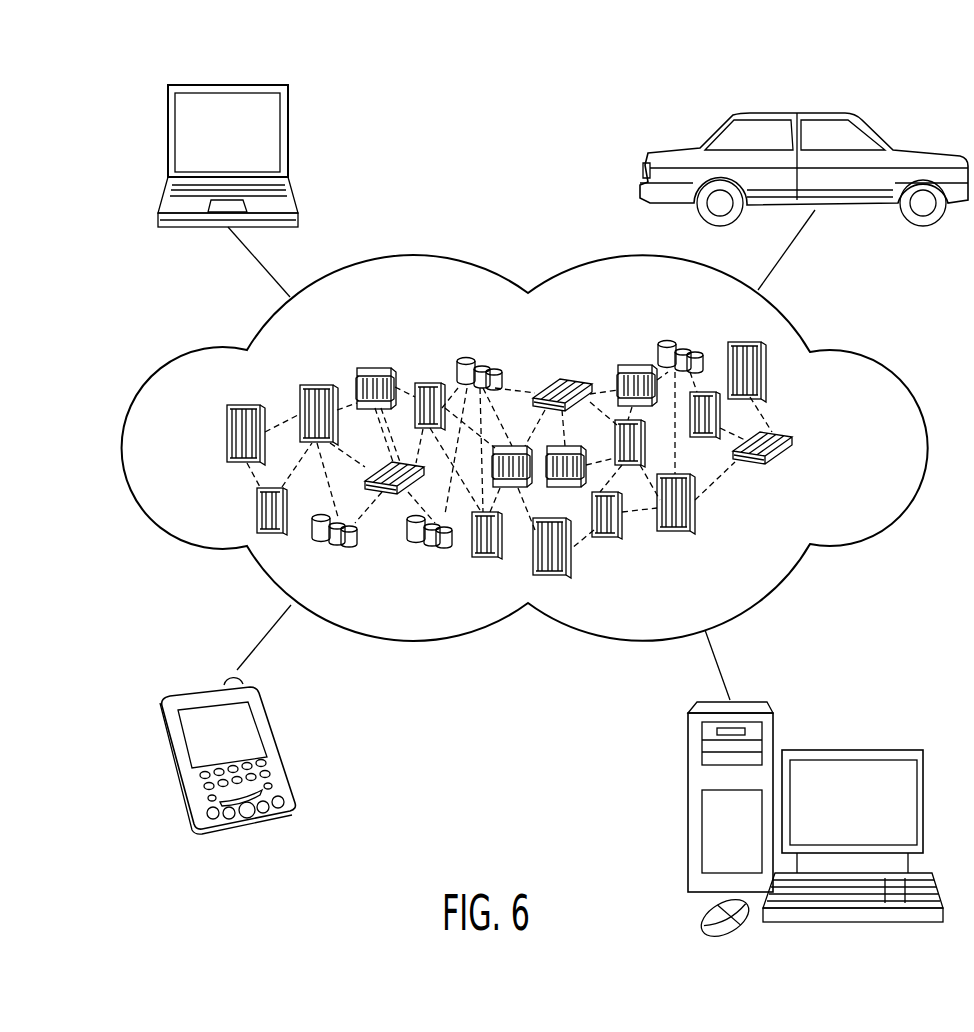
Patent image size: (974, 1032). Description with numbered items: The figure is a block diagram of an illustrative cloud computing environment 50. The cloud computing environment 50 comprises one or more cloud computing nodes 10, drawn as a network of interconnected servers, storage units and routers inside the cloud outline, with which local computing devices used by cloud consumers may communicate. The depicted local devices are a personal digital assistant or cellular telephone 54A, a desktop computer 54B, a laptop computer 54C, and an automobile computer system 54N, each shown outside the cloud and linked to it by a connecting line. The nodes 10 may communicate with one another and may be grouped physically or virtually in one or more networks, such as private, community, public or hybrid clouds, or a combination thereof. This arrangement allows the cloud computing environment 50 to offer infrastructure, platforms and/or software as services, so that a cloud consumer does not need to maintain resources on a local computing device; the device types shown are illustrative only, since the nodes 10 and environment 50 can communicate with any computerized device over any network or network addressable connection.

The cloud computing node 10 is at (802, 448).
The cloud computing environment 50 is at (867, 355).
The personal digital assistant or cellular telephone 54A is at (208, 687).
The desktop computer 54B is at (852, 748).
The laptop computer 54C is at (227, 85).
The automobile computer system 54N is at (788, 115).